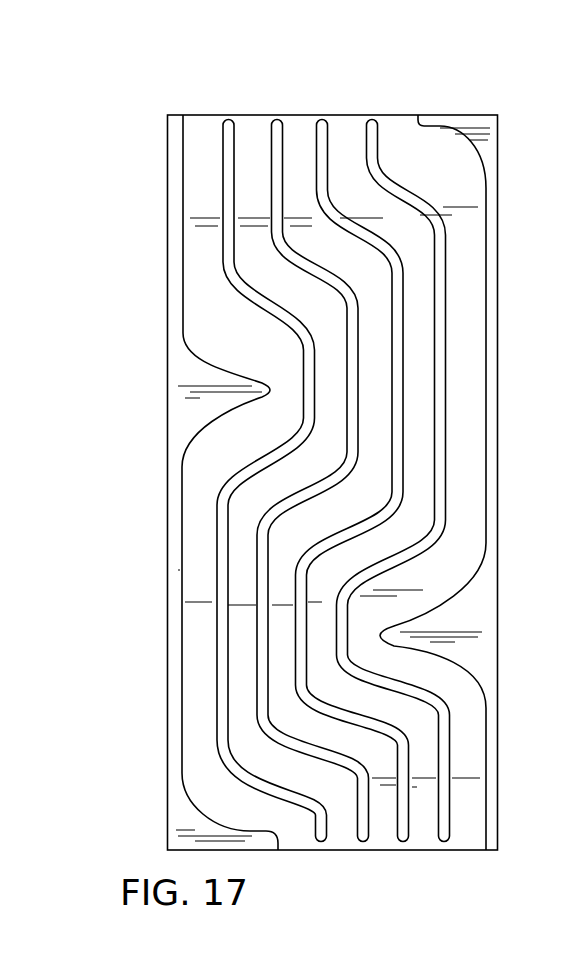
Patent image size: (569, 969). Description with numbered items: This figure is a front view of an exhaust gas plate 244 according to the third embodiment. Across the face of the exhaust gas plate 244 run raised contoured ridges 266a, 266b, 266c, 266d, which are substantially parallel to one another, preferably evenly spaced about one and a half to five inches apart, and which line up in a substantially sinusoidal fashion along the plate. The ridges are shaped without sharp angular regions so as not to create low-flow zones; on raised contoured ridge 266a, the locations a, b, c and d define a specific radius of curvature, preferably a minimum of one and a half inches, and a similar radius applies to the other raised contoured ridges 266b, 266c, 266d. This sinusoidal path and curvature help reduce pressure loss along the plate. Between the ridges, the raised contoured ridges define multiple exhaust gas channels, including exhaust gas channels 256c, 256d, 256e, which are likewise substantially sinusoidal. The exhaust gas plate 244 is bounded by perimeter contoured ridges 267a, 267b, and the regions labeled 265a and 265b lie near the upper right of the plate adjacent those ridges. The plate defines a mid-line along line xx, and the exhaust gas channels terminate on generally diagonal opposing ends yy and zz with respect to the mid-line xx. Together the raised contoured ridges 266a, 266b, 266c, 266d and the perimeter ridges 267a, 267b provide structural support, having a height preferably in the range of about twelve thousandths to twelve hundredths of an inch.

The exhaust gas plate 244 is at (424, 97).
The raised contoured ridge 266a is at (371, 120).
The raised contoured ridge 266b is at (322, 120).
The raised contoured ridge 266c is at (276, 120).
The raised contoured ridge 266d is at (227, 121).
The perimeter contoured ridge 267a is at (487, 139).
The perimeter contoured ridge 267b is at (180, 398).
The land region 265a is at (460, 169).
The land region 265b is at (390, 209).
The exhaust gas channel 256c is at (353, 265).
The exhaust gas channel 256d is at (305, 312).
The exhaust gas channel 256e is at (250, 354).
The location a is at (361, 659).
The location b is at (338, 580).
The location c is at (416, 539).
The location d is at (410, 213).
The mid-line xx is at (167, 472).
The end of exhaust gas channels yy is at (254, 103).
The end of exhaust gas channels zz is at (371, 869).